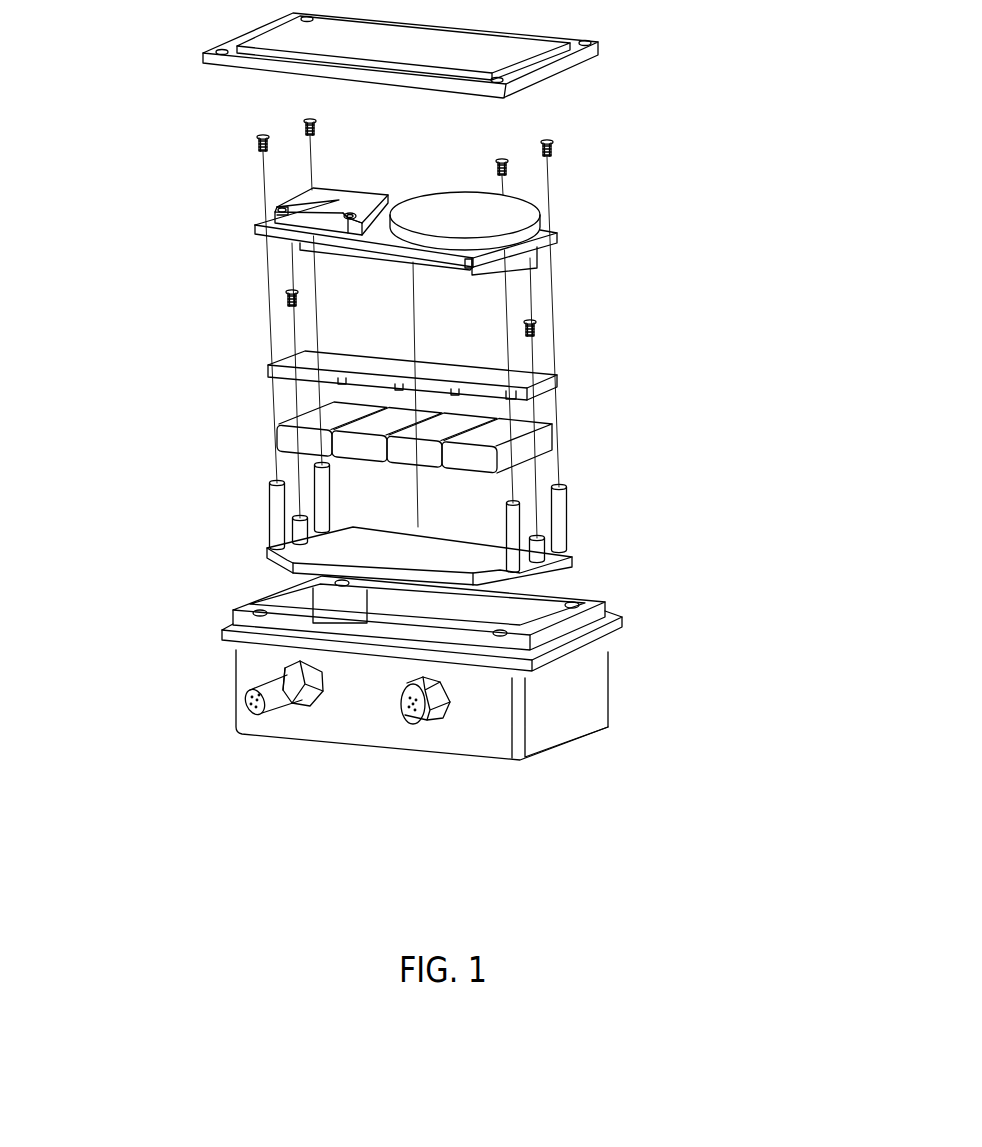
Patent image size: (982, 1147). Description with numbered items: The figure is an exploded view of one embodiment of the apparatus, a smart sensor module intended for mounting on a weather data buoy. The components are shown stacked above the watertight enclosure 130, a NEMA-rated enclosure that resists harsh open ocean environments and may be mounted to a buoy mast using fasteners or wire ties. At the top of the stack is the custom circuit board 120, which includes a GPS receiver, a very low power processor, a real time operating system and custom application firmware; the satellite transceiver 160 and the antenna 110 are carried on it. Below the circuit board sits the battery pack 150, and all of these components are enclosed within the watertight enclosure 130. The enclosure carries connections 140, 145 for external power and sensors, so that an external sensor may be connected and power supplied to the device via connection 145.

The antenna 110 is at (492, 217).
The circuit board 120 is at (474, 274).
The watertight enclosure 130 is at (573, 683).
The connection 140 is at (292, 685).
The connection 145 is at (422, 712).
The battery pack 150 is at (323, 422).
The satellite transceiver 160 is at (312, 207).